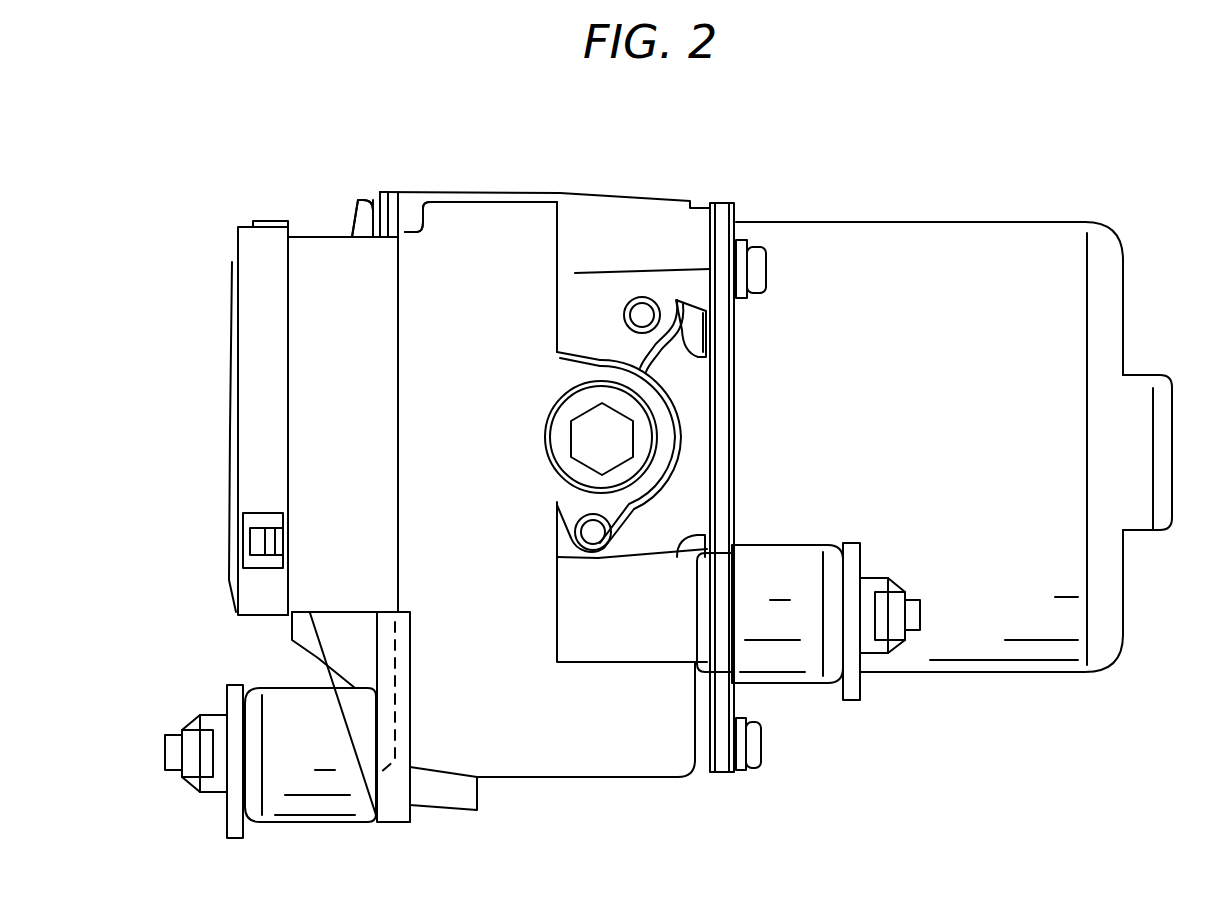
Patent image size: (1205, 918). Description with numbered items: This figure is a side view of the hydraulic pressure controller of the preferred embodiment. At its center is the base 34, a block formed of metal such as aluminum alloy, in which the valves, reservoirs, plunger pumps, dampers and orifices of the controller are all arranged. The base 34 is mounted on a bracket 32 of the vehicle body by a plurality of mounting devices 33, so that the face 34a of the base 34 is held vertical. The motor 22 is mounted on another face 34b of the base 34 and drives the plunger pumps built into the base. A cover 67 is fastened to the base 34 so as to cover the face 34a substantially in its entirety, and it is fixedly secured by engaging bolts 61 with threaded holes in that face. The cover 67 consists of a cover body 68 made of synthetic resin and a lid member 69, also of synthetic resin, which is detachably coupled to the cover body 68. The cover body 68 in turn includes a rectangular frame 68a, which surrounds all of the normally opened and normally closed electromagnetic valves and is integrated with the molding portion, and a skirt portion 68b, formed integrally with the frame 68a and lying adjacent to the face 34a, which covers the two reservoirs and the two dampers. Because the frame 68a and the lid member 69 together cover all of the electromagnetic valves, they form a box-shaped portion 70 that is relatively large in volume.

The motor 22 is at (921, 421).
The bracket 32 is at (858, 677).
The mounting devices 33 is at (790, 562).
The base 34 is at (612, 762).
The face of the base 34a is at (398, 283).
The another face of the base 34b is at (714, 268).
The bolts 61 is at (355, 207).
The cover 67 is at (230, 414).
The cover body 68 is at (398, 528).
The rectangular frame 68a is at (305, 247).
The skirt portion 68b is at (380, 660).
The lid member 69 is at (250, 268).
The box-shaped portion 70 is at (183, 130).